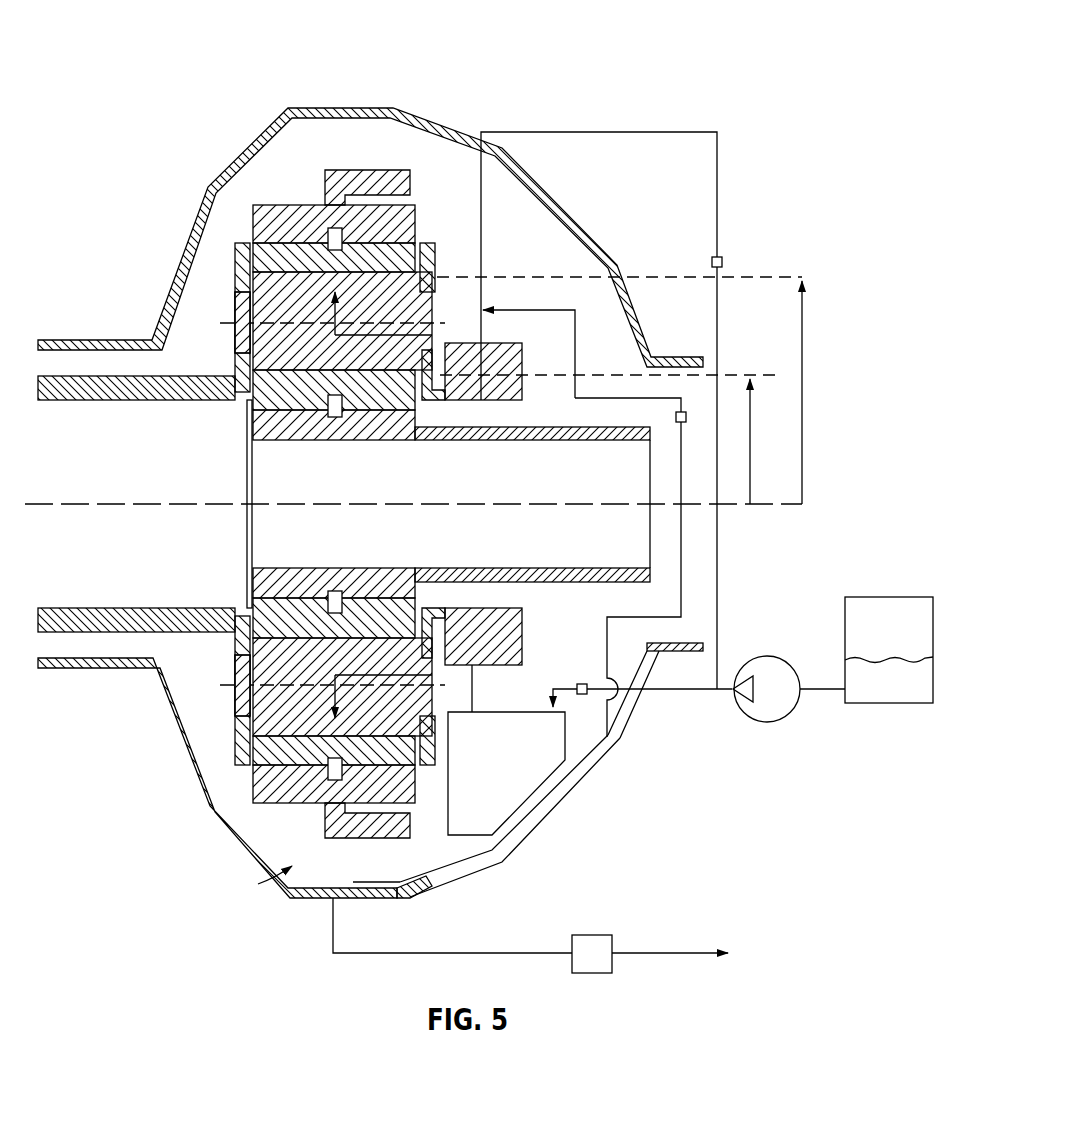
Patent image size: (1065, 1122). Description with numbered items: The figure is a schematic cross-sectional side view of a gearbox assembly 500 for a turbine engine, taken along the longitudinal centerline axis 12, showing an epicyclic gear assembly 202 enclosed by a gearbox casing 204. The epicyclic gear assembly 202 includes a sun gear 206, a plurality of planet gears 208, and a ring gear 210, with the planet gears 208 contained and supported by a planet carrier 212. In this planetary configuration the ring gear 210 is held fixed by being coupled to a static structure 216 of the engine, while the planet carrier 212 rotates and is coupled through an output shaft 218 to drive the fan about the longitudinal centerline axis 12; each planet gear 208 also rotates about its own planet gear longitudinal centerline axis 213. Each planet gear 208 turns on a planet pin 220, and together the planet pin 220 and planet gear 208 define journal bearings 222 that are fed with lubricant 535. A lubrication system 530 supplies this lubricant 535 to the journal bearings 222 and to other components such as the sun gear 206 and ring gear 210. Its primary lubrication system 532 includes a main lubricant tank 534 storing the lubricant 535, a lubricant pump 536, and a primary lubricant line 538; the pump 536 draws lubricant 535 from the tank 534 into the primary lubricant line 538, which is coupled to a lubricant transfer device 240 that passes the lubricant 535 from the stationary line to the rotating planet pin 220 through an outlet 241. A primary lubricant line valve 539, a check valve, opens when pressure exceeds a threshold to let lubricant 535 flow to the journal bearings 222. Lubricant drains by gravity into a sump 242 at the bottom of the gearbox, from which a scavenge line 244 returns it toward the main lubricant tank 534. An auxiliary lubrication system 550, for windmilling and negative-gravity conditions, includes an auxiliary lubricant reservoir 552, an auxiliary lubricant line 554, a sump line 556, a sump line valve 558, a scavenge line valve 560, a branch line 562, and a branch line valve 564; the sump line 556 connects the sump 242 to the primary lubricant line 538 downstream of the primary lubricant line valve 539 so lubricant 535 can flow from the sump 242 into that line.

The gearbox assembly 500 is at (154, 42).
The lubrication system 530 is at (793, 68).
The primary lubrication system 532 is at (862, 494).
The longitudinal centerline axis 12 is at (123, 500).
The epicyclic gear assembly 202 is at (264, 192).
The gearbox casing 204 is at (210, 190).
The sun gear 206 is at (256, 422).
The planet gears 208 is at (411, 256).
The ring gear 210 is at (272, 214).
The planet carrier 212 is at (440, 268).
The planet gear longitudinal centerline axis 213 is at (247, 676).
The static structure 216 is at (372, 178).
The output shaft 218 is at (121, 399).
The planet pin 220 is at (250, 343).
The journal bearings 222 is at (244, 272).
The lubricant transfer device 240 is at (493, 338).
The outlet 241 is at (528, 366).
The sump 242 is at (260, 883).
The scavenge line 244 is at (393, 954).
The main lubricant tank 534 is at (890, 597).
The lubricant 535 is at (890, 705).
The lubricant pump 536 is at (771, 656).
The primary lubricant line 538 is at (720, 200).
The primary lubricant line valve 539 is at (724, 262).
The auxiliary lubrication system 550 is at (703, 634).
The auxiliary lubricant reservoir 552 is at (532, 793).
The auxiliary lubricant line 554 is at (474, 676).
The sump line 556 is at (410, 884).
The sump line valve 558 is at (676, 423).
The scavenge line valve 560 is at (593, 974).
The branch line 562 is at (697, 693).
The branch line valve 564 is at (582, 683).